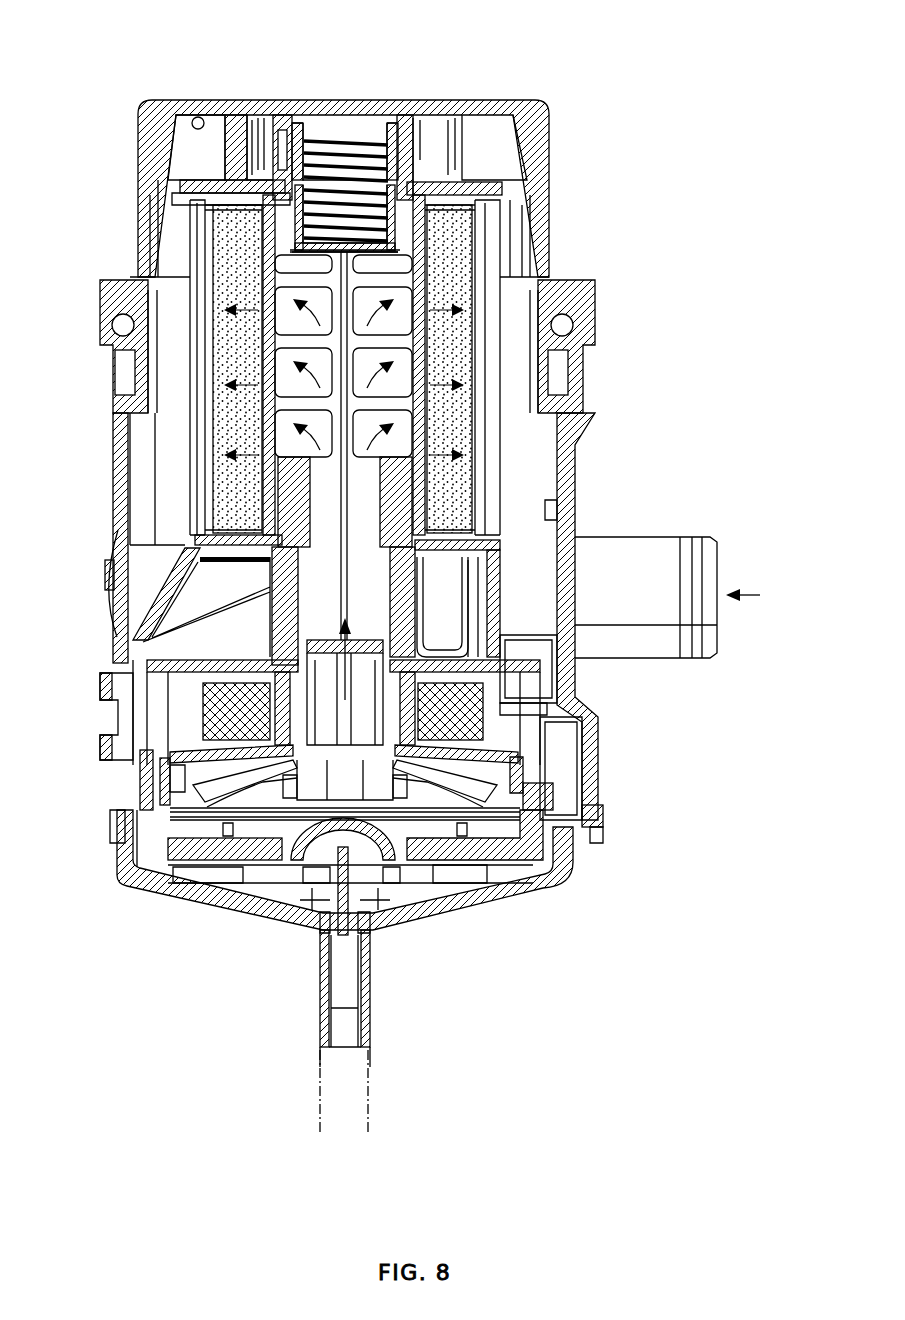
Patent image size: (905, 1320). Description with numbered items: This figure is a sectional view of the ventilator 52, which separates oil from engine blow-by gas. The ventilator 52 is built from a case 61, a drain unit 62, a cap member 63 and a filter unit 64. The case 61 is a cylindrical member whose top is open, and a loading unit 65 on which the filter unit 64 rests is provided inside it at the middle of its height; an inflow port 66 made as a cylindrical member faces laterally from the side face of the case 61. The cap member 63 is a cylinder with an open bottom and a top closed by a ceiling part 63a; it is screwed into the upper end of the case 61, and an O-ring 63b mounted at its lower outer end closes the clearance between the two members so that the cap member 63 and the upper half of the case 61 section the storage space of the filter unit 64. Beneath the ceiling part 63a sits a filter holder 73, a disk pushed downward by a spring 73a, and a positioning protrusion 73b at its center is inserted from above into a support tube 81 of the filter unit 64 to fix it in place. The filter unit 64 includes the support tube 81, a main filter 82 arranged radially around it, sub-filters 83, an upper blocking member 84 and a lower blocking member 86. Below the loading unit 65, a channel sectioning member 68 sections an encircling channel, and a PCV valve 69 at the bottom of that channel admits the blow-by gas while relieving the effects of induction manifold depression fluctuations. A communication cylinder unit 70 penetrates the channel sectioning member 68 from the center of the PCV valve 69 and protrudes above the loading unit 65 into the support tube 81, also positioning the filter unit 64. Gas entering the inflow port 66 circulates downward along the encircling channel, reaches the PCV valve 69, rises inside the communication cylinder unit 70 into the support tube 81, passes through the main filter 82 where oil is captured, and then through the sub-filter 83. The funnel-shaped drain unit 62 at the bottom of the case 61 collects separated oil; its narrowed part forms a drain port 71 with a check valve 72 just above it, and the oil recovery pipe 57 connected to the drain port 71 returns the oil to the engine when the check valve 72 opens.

The ventilator 52 is at (558, 88).
The oil recovery pipe 57 is at (370, 1090).
The case 61 is at (577, 490).
The drain unit 62 is at (520, 890).
The cap member 63 is at (422, 100).
The ceiling part 63a is at (200, 118).
The O-ring 63b is at (118, 325).
The filter unit 64 is at (504, 245).
The loading unit 65 is at (165, 592).
The inflow port 66 is at (648, 660).
The channel sectioning member 68 is at (334, 795).
The PCV valve 69 is at (330, 812).
The communication cylinder unit 70 is at (372, 752).
The drain port 71 is at (323, 990).
The check valve 72 is at (322, 940).
The filter holder 73 is at (464, 145).
The spring 73a is at (352, 150).
The positioning protrusion 73b is at (405, 233).
The support tube 81 is at (290, 280).
The main filter 82 is at (218, 245).
The sub-filter 83 is at (200, 372).
The upper blocking member 84 is at (188, 190).
The lower blocking member 86 is at (457, 560).